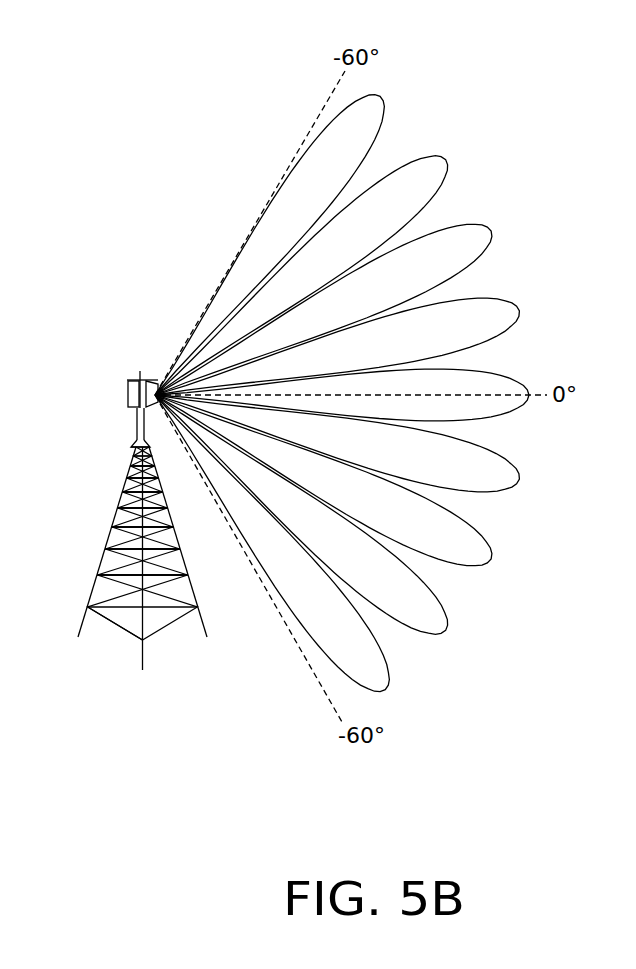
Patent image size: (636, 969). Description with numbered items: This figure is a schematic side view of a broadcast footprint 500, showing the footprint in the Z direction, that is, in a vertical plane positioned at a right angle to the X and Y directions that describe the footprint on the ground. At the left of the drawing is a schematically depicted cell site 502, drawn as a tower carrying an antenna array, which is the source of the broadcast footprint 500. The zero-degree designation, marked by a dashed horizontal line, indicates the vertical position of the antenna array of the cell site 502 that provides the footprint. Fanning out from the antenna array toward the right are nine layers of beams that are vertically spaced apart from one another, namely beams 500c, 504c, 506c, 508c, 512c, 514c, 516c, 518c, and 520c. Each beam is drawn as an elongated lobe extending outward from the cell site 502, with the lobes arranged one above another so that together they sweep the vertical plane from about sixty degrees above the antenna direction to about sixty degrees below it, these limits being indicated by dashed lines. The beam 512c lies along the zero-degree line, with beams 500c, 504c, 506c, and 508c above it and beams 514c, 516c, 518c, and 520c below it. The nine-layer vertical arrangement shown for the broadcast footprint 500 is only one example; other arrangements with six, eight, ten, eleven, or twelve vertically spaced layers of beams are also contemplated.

The broadcast footprint 500 is at (563, 139).
The cell site 502 is at (99, 576).
The beam 500c is at (387, 96).
The beam 504c is at (448, 156).
The beam 506c is at (494, 229).
The beam 508c is at (522, 308).
The beam 512c is at (522, 405).
The beam 514c is at (522, 482).
The beam 516c is at (495, 563).
The beam 518c is at (449, 634).
The beam 520c is at (390, 697).